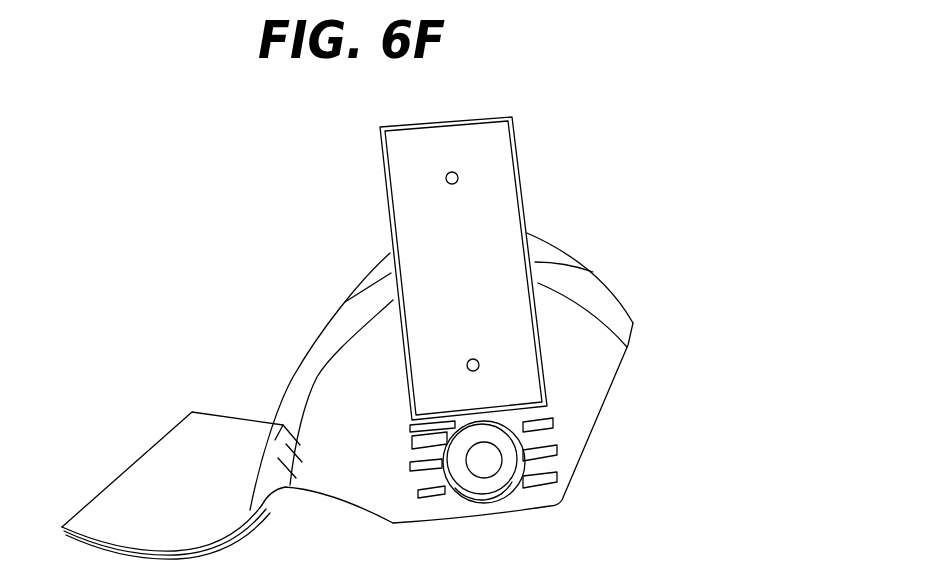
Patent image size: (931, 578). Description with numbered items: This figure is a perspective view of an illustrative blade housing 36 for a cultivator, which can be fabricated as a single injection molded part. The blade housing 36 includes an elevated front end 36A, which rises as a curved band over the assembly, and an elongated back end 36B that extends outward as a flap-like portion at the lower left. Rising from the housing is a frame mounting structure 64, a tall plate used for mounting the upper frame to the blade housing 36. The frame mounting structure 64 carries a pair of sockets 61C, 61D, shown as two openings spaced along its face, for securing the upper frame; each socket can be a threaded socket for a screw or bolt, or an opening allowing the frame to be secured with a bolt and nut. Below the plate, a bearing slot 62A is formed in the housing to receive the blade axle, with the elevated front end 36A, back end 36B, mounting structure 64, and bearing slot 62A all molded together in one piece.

The blade housing 36 is at (186, 213).
The elevated front end 36A is at (633, 327).
The elongated back end 36B is at (113, 497).
The frame mounting structure 64 is at (512, 197).
The socket 61C is at (446, 178).
The socket 61D is at (467, 366).
The bearing slot 62A is at (493, 467).